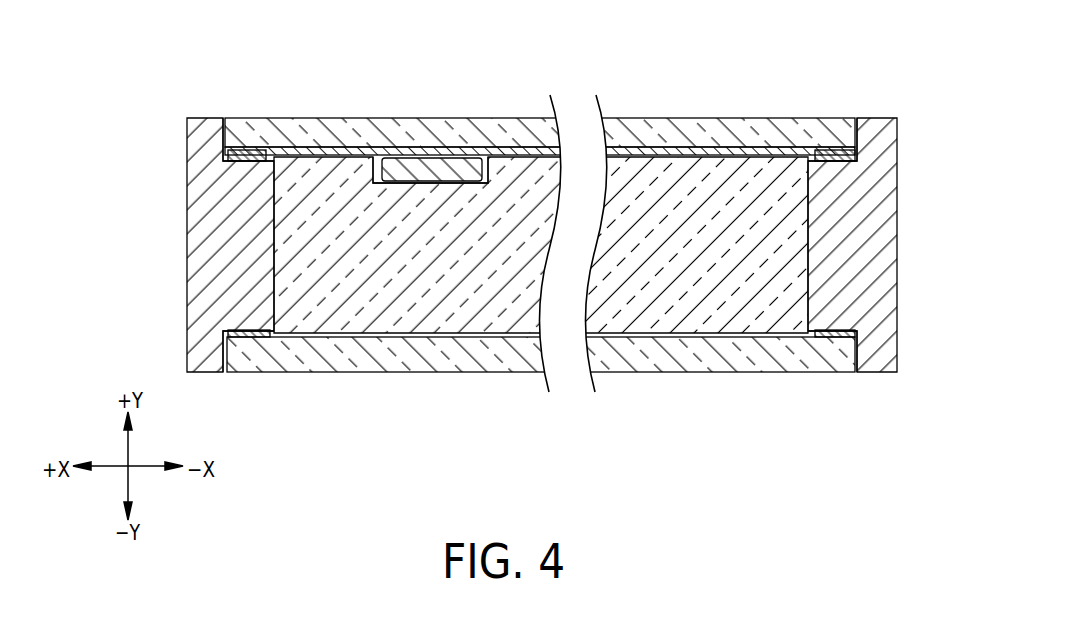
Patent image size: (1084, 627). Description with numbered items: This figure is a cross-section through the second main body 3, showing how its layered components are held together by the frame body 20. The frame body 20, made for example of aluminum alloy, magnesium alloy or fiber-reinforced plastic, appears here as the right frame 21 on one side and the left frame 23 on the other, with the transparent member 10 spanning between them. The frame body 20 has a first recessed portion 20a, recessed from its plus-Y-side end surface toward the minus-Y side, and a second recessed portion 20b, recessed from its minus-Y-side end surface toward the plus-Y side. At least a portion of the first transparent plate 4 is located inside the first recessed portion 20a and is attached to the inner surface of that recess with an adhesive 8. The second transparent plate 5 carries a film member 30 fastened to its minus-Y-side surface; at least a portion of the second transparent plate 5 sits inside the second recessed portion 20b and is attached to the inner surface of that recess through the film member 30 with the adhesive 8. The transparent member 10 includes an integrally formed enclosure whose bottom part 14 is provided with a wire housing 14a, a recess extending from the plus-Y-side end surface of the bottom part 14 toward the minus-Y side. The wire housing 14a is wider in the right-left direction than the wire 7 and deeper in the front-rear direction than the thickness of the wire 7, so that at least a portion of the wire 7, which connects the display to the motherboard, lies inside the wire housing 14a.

The second main body 3 is at (530, 233).
The frame body 20 is at (540, 229).
The first recessed portion 20a is at (227, 140).
The second recessed portion 20b is at (229, 360).
The right frame 21 is at (878, 238).
The left frame 23 is at (200, 268).
The second transparent plate 5 is at (724, 134).
The first transparent plate 4 is at (692, 357).
The film member 30 is at (633, 152).
The adhesive 8 is at (247, 154).
The transparent member 10 is at (541, 254).
The bottom part 14 is at (359, 330).
The wire housing 14a is at (384, 166).
The wire 7 is at (450, 170).